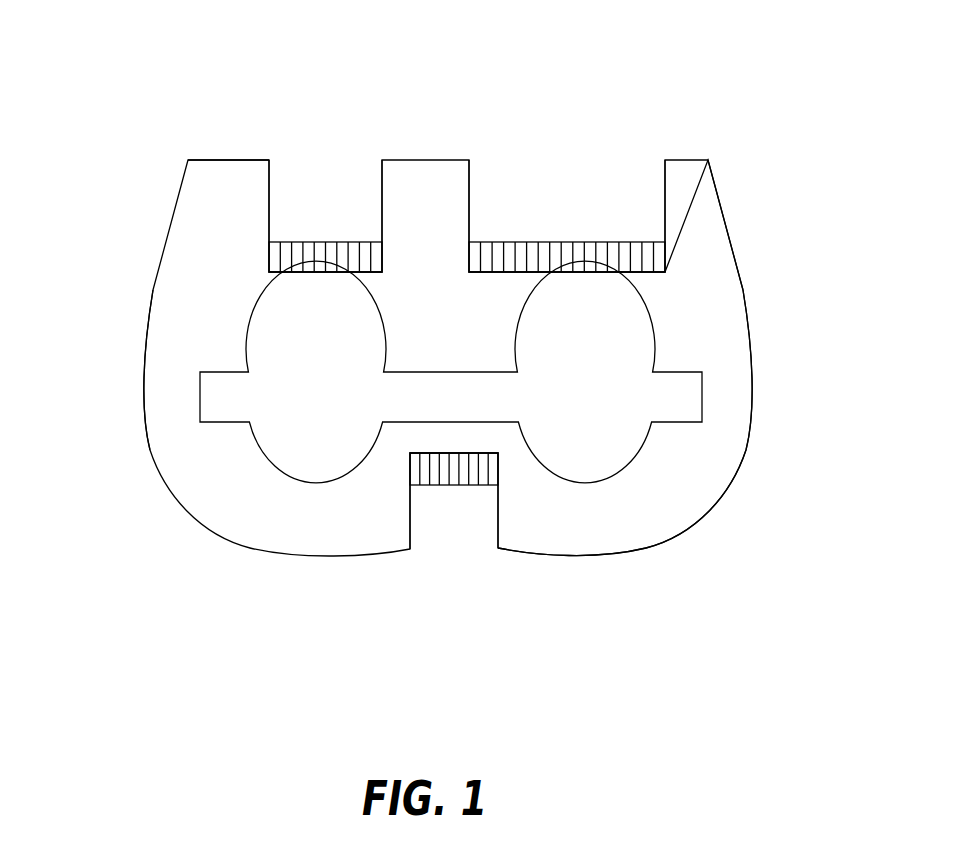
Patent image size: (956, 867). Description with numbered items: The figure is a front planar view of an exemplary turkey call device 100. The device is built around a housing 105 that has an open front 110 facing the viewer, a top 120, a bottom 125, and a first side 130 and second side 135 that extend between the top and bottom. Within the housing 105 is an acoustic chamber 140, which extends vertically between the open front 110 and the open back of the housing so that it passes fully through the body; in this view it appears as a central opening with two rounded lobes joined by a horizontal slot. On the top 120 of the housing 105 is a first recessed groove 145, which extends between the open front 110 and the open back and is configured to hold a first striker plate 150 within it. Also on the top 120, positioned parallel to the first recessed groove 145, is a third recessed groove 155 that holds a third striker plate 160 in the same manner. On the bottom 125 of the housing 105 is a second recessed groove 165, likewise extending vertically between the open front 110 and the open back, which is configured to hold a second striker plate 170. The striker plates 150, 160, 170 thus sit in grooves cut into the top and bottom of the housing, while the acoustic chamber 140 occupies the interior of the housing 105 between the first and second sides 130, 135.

The turkey call device 100 is at (629, 52).
The housing 105 is at (704, 236).
The open front 110 is at (696, 499).
The top 120 is at (216, 160).
The bottom 125 is at (597, 553).
The first side 130 is at (143, 378).
The second side 135 is at (755, 385).
The acoustic chamber 140 is at (451, 372).
The first recessed groove 145 is at (272, 176).
The first striker plate 150 is at (322, 250).
The third recessed groove 155 is at (472, 176).
The third striker plate 160 is at (568, 250).
The second recessed groove 165 is at (412, 532).
The second striker plate 170 is at (473, 485).